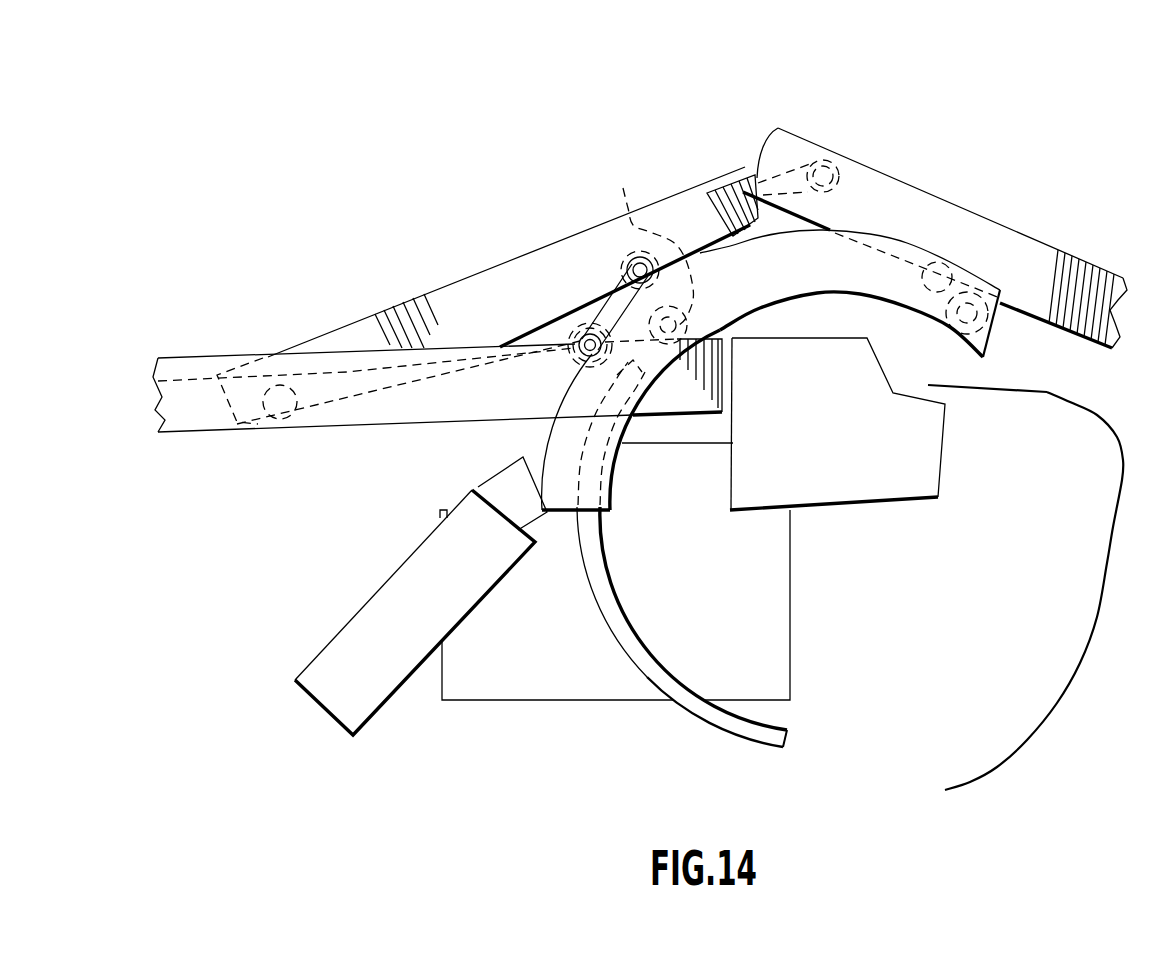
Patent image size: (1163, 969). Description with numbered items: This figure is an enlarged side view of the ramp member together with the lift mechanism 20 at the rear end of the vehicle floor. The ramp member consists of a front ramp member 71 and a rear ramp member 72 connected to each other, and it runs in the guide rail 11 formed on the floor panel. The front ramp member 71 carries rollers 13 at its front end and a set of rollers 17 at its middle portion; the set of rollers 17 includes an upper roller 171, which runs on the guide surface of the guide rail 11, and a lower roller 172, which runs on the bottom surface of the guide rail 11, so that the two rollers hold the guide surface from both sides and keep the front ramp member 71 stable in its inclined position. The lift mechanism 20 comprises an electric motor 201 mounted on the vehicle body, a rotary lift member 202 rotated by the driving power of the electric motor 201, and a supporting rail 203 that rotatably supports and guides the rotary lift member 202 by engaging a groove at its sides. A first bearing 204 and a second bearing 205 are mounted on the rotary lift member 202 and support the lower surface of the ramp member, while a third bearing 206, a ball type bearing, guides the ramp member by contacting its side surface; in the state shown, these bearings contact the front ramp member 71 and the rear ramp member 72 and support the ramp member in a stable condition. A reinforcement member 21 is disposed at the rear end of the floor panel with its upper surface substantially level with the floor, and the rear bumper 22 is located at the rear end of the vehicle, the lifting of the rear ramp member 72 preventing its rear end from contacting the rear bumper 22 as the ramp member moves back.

The guide rail 11 is at (177, 417).
The rollers 13 is at (287, 422).
The set of rollers 17 is at (586, 275).
The upper roller 171 is at (632, 258).
The lower roller 172 is at (573, 333).
The lift mechanism 20 is at (515, 678).
The electric motor 201 is at (352, 633).
The rotary lift member 202 is at (733, 255).
The supporting rail 203 is at (705, 717).
The first bearing 204 is at (640, 250).
The second bearing 205 is at (992, 290).
The third bearing 206 is at (958, 262).
The reinforcement member 21 is at (870, 485).
The rear bumper 22 is at (993, 765).
The front ramp member 71 is at (460, 302).
The rear ramp member 72 is at (897, 208).